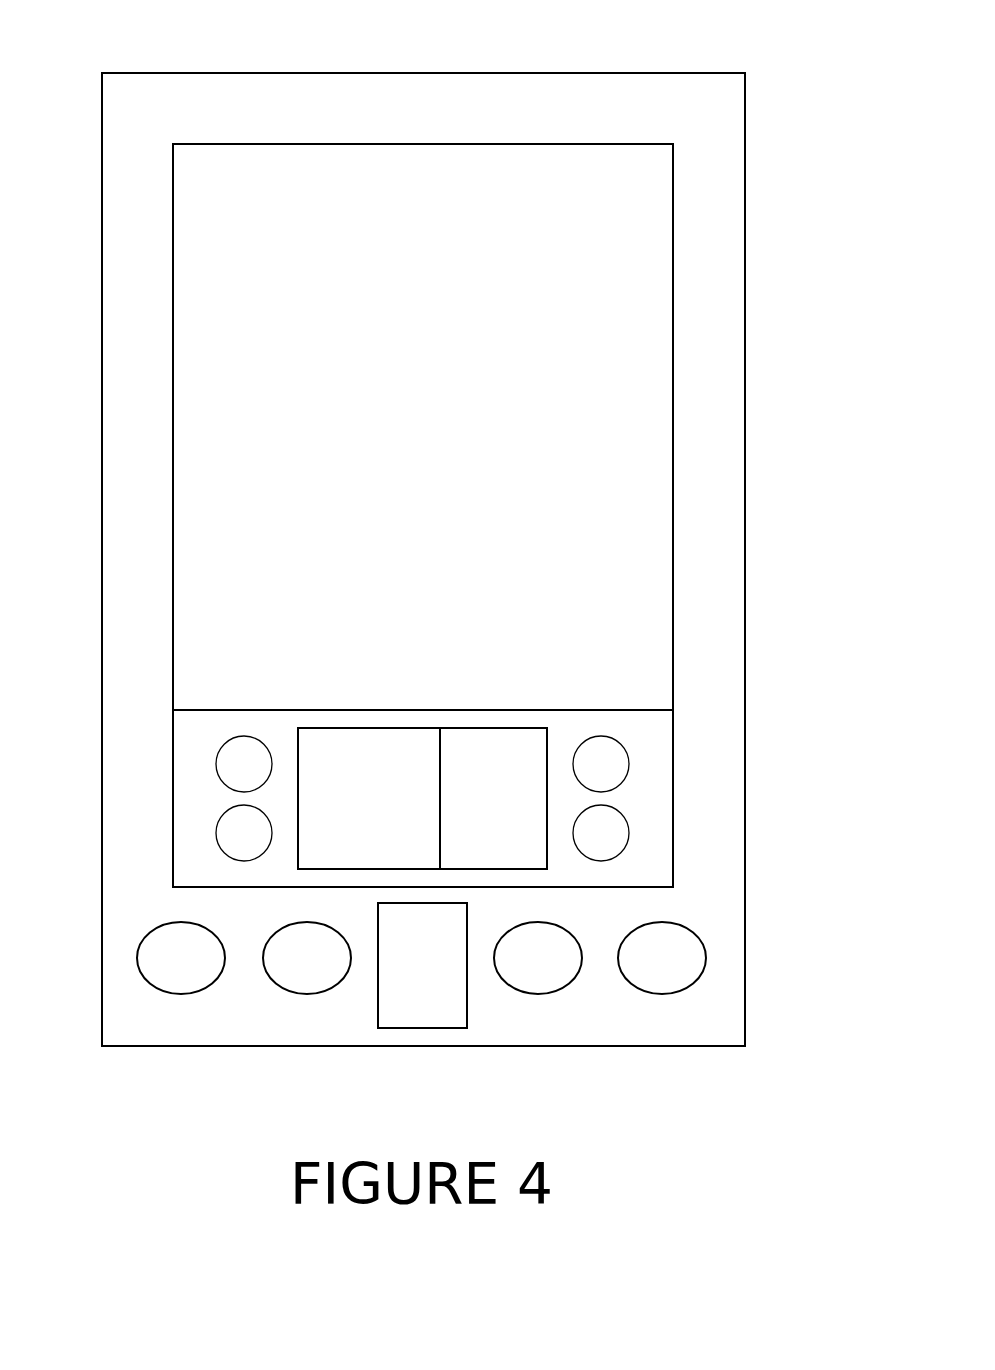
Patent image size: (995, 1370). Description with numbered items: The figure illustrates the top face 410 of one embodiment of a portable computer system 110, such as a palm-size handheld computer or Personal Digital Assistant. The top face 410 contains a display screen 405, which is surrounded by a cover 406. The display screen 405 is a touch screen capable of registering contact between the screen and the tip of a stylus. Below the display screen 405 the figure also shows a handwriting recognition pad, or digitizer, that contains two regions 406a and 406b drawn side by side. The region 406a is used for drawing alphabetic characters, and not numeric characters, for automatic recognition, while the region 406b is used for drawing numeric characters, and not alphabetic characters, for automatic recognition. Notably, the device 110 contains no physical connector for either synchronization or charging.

The portable computer system 110 is at (75, 33).
The display screen 405 is at (637, 354).
The cover 406 is at (500, 518).
The region 406a is at (369, 798).
The region 406b is at (493, 798).
The top face 410 is at (745, 478).